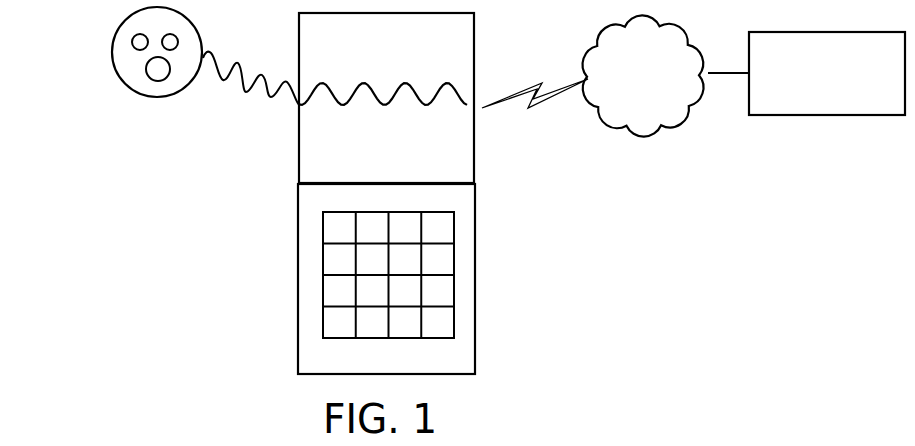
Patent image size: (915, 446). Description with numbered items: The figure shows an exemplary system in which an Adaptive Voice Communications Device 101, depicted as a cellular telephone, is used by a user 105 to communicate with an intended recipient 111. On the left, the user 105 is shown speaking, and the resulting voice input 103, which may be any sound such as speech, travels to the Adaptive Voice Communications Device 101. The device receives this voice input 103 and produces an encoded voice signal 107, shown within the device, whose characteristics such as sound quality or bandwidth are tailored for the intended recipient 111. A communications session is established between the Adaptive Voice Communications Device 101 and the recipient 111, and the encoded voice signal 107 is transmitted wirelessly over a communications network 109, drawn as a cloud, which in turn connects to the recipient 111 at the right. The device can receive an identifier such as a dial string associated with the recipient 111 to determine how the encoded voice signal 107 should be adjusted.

The Adaptive Voice Communications Device 101 is at (497, 175).
The voice input 103 is at (240, 87).
The user 105 is at (133, 90).
The encoded voice signal 107 is at (392, 102).
The communications network 109 is at (657, 82).
The intended recipient 111 is at (823, 99).